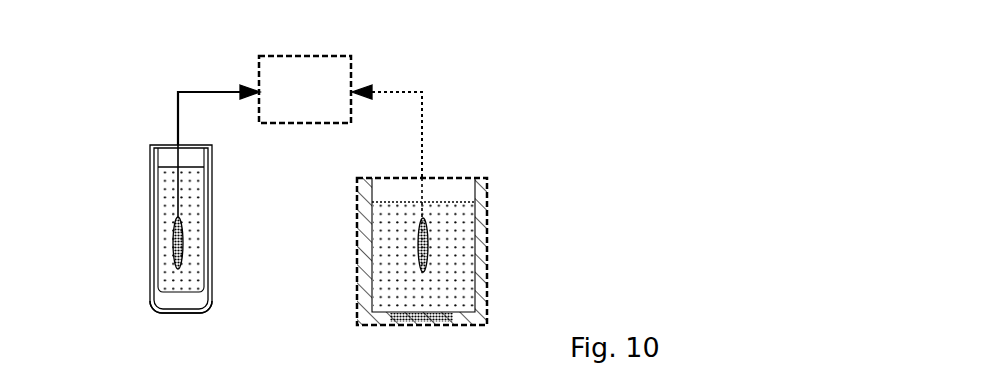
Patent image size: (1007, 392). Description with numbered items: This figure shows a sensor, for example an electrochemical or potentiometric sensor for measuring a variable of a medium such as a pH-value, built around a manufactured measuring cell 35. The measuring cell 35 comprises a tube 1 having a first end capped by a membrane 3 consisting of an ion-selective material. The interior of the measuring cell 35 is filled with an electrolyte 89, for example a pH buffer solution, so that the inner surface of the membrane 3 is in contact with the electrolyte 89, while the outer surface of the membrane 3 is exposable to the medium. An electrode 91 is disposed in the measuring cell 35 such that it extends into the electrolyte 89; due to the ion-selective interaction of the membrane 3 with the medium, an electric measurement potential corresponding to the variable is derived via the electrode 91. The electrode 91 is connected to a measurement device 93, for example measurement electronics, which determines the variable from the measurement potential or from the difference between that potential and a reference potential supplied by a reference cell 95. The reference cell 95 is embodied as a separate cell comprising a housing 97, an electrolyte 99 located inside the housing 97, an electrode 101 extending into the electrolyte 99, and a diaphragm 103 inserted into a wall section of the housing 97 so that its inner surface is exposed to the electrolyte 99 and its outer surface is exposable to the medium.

The tube 1 is at (157, 270).
The membrane 3 is at (162, 312).
The measuring cell 35 is at (108, 347).
The electrolyte 89 is at (165, 185).
The electrode 91 is at (180, 242).
The measurement device 93 is at (319, 100).
The reference cell 95 is at (478, 150).
The housing 97 is at (487, 267).
The electrolyte 99 is at (380, 235).
The electrode 101 is at (420, 248).
The diaphragm 103 is at (412, 323).